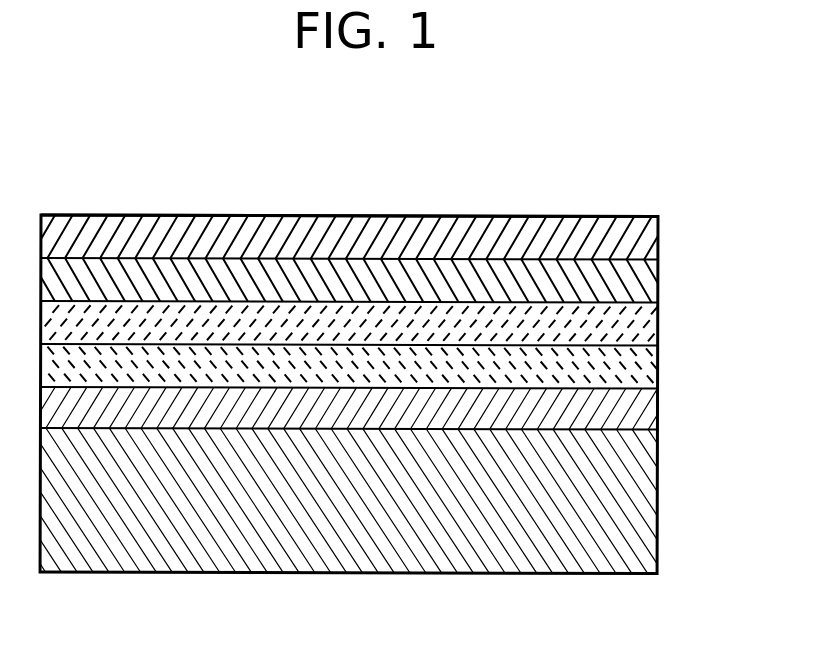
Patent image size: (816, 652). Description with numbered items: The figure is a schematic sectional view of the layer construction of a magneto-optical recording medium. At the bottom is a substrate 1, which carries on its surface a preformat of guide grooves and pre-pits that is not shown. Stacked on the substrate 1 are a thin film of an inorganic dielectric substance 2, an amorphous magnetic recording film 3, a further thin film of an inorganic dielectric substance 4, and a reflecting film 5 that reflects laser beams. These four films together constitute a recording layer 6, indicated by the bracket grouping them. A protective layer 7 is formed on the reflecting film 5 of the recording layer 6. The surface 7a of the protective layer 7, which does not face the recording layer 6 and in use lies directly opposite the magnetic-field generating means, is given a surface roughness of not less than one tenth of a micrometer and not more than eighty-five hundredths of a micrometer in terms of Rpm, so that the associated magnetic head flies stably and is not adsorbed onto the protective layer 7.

The substrate 1 is at (658, 478).
The thin film of an inorganic dielectric substance 2 is at (658, 412).
The amorphous magnetic recording film 3 is at (658, 369).
The thin film of an inorganic dielectric substance 4 is at (658, 330).
The reflecting film 5 is at (658, 284).
The recording layer 6 is at (736, 268).
The protective layer 7 is at (658, 242).
The surface of the protective layer 7a is at (430, 193).